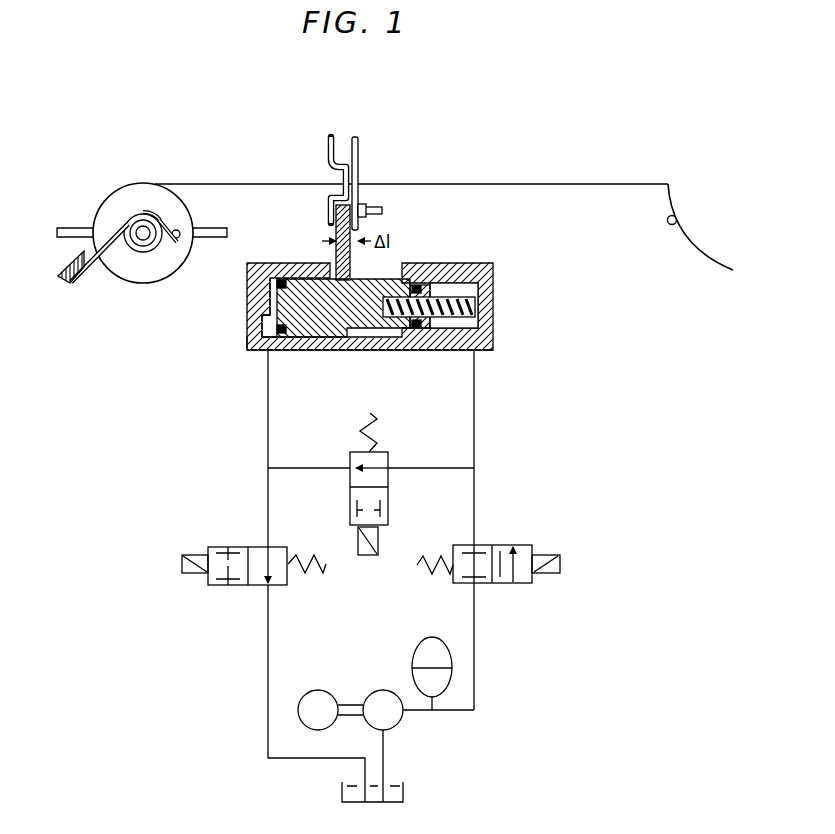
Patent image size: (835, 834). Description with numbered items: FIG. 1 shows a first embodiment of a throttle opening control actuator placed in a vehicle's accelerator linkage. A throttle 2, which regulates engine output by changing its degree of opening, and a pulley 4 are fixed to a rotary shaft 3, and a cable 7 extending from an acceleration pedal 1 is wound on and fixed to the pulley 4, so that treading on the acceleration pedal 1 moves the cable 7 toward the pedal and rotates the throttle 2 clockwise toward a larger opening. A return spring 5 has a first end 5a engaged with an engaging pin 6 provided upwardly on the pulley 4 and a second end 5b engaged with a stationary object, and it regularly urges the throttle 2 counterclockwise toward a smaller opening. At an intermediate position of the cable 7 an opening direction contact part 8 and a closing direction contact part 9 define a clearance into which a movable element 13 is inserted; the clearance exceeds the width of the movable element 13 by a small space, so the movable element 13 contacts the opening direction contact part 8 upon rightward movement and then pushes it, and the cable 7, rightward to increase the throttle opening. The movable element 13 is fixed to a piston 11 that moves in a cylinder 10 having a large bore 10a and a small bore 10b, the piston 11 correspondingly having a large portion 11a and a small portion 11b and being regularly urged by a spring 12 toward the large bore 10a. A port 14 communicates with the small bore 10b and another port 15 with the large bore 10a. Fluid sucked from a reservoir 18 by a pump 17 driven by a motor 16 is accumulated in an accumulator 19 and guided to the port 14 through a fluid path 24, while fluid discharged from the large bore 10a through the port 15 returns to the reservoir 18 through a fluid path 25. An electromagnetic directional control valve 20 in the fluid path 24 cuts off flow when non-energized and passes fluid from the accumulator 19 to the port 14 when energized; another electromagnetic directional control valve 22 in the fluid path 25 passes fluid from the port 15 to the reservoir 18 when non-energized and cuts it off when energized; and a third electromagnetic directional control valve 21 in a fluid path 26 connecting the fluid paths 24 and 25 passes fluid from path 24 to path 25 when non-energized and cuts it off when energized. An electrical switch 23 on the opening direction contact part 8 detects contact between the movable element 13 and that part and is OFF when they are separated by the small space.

The acceleration pedal 1 is at (703, 247).
The throttle 2 is at (213, 230).
The rotary shaft 3 is at (123, 226).
The pulley 4 is at (133, 198).
The return spring 5 is at (93, 258).
The first end 5a is at (170, 243).
The second end 5b is at (71, 283).
The engaging pin 6 is at (180, 230).
The cable 7 is at (570, 184).
The opening direction contact part 8 is at (360, 137).
The closing direction contact part 9 is at (327, 137).
The cylinder 10 is at (493, 293).
The large bore 10a is at (312, 285).
The small bore 10b is at (453, 287).
The piston 11 is at (318, 337).
The large portion 11a is at (248, 307).
The small portion 11b is at (420, 328).
The spring 12 is at (480, 322).
The movable element 13 is at (334, 212).
The port 14 is at (492, 347).
The port 15 is at (245, 355).
The motor 16 is at (308, 690).
The pump 17 is at (366, 698).
The reservoir 18 is at (403, 783).
The accumulator 19 is at (413, 650).
The electromagnetic directional control valve 20 is at (530, 545).
The electromagnetic directional control valve 21 is at (388, 452).
The electromagnetic directional control valve 22 is at (252, 547).
The electrical switch 23 is at (382, 209).
The fluid path 24 is at (474, 492).
The fluid path 25 is at (268, 643).
The fluid path 26 is at (300, 468).